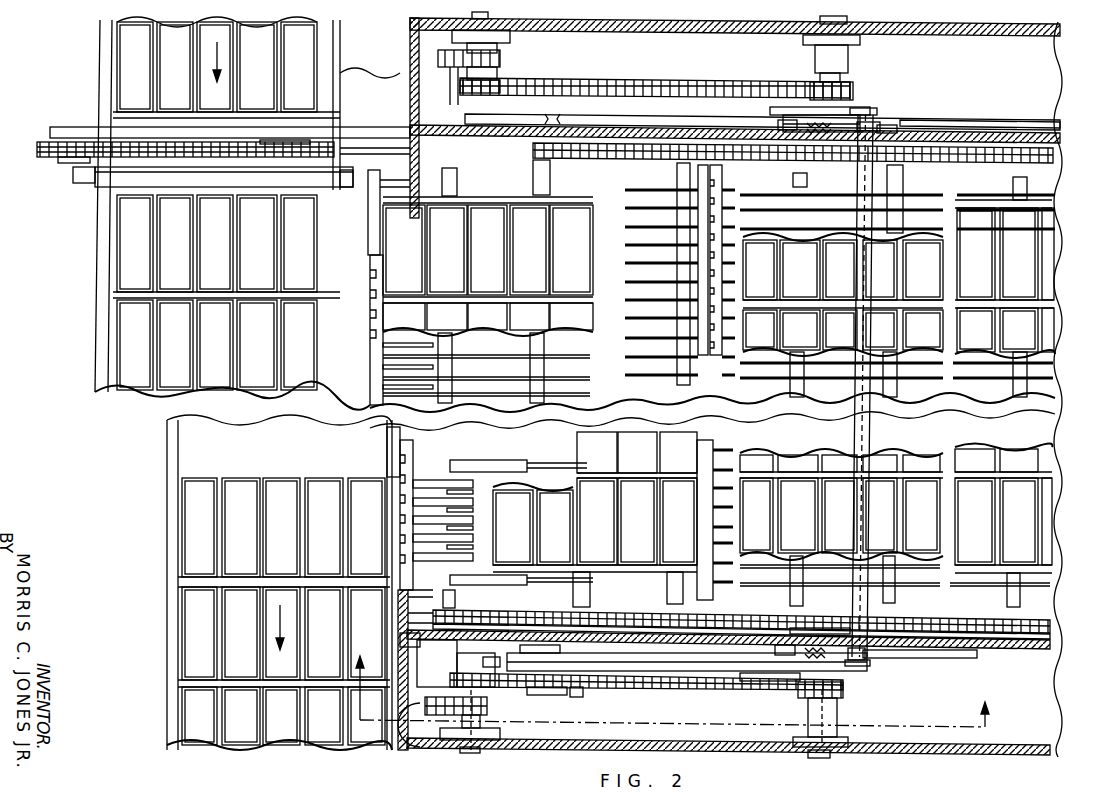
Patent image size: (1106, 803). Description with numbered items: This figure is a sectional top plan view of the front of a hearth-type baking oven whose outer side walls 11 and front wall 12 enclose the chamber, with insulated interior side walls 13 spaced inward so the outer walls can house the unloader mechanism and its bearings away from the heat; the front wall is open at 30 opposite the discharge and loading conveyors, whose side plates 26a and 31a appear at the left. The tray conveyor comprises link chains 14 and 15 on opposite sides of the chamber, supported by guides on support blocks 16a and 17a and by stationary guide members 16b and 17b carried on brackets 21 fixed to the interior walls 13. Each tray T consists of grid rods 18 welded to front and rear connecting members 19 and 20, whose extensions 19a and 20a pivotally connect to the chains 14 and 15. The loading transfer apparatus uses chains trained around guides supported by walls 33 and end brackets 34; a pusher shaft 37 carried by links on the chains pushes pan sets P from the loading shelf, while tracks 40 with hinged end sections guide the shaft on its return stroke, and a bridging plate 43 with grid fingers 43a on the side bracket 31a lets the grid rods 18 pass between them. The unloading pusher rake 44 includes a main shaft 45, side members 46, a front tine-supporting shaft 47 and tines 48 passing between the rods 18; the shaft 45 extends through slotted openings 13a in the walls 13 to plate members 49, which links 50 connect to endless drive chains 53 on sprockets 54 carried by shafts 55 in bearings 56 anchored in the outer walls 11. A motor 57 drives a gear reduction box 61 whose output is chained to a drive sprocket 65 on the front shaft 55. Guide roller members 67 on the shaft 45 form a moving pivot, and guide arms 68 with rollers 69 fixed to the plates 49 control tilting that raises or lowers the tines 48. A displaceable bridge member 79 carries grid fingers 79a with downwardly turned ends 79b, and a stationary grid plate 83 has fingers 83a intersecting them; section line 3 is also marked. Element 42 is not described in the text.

The outer side wall 11 is at (560, 752).
The front wall 12 is at (405, 745).
The interior side wall 13 is at (1010, 132).
The slotted opening 13a is at (957, 130).
The link chain 14 is at (1050, 620).
The link chain 15 is at (1055, 178).
The support block 16a is at (420, 623).
The stationary guide member 16b is at (1050, 630).
The support block 17a is at (570, 140).
The stationary guide member 17b is at (1068, 130).
The grid rod 18 is at (630, 320).
The front connecting member 19 is at (449, 402).
The extension 19a is at (455, 600).
The rear connecting member 20 is at (534, 402).
The extension 20a is at (550, 165).
The bracket 21 is at (795, 142).
The side plate 26a is at (172, 575).
The opening 30 is at (398, 596).
The side plate 31a is at (100, 365).
The wall 33 is at (73, 128).
The end bracket 34 is at (52, 138).
The pusher shaft 37 is at (370, 215).
The track 40 is at (118, 177).
The sprocket 42 is at (52, 158).
The bridging plate 43 is at (350, 338).
The grid finger 43a is at (372, 378).
The pusher rake 44 is at (720, 605).
The main shaft 45 is at (885, 140).
The side member 46 is at (745, 600).
The front tine-supporting shaft 47 is at (715, 175).
The tine 48 is at (690, 165).
The plate member 49 is at (860, 662).
The link 50 is at (770, 625).
The drive chain 53 is at (643, 690).
The sprocket 54 is at (487, 690).
The shaft 55 is at (805, 703).
The bearing 56 is at (490, 740).
The motor 57 is at (578, 690).
The gear reduction box 61 is at (442, 670).
The drive sprocket 65 is at (512, 717).
The guide roller member 67 is at (870, 150).
The guide arm 68 is at (775, 682).
The guide roller member 69 is at (750, 682).
The bridge member 79 is at (500, 460).
The grid finger 79a is at (545, 470).
The downwardly turned portion 79b is at (600, 455).
The stationary grid plate 83 is at (400, 455).
The grid finger 83a is at (468, 462).
The pan set P is at (130, 70).
The tray T is at (628, 377).
The section line 3- 3 is at (672, 681).